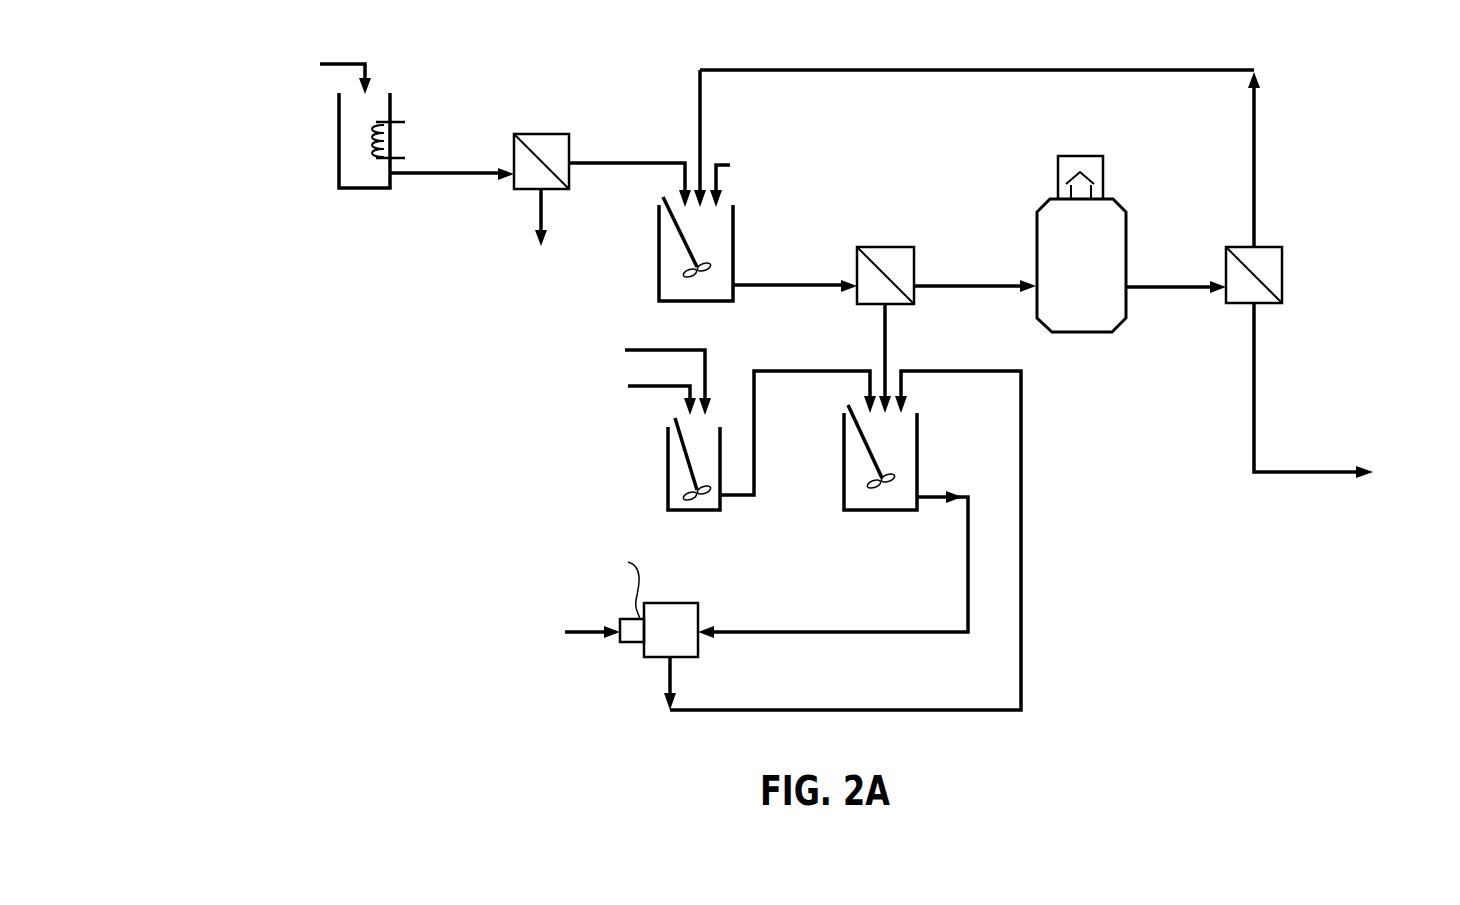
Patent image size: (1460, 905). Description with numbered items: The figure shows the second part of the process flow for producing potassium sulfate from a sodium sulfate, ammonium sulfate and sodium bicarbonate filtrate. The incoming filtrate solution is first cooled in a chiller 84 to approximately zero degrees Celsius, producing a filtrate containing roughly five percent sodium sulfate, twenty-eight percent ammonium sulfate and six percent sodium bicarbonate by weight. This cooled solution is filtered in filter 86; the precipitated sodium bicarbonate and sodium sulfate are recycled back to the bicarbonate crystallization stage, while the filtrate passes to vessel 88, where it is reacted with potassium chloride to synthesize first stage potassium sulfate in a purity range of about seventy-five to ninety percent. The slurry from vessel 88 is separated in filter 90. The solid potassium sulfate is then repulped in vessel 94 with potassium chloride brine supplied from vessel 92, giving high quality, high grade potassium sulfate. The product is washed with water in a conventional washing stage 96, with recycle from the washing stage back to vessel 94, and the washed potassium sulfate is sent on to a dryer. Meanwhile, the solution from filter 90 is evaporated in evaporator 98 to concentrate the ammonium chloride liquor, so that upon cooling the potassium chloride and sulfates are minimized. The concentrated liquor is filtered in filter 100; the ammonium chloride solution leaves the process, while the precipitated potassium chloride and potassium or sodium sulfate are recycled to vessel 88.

The chiller 84 is at (339, 184).
The filter 86 is at (542, 134).
The vessel 88 is at (659, 268).
The filter 90 is at (886, 247).
The vessel 92 is at (668, 452).
The vessel 94 is at (844, 507).
The washing stage 96 is at (646, 657).
The evaporator 98 is at (1128, 200).
The filter 100 is at (1283, 263).